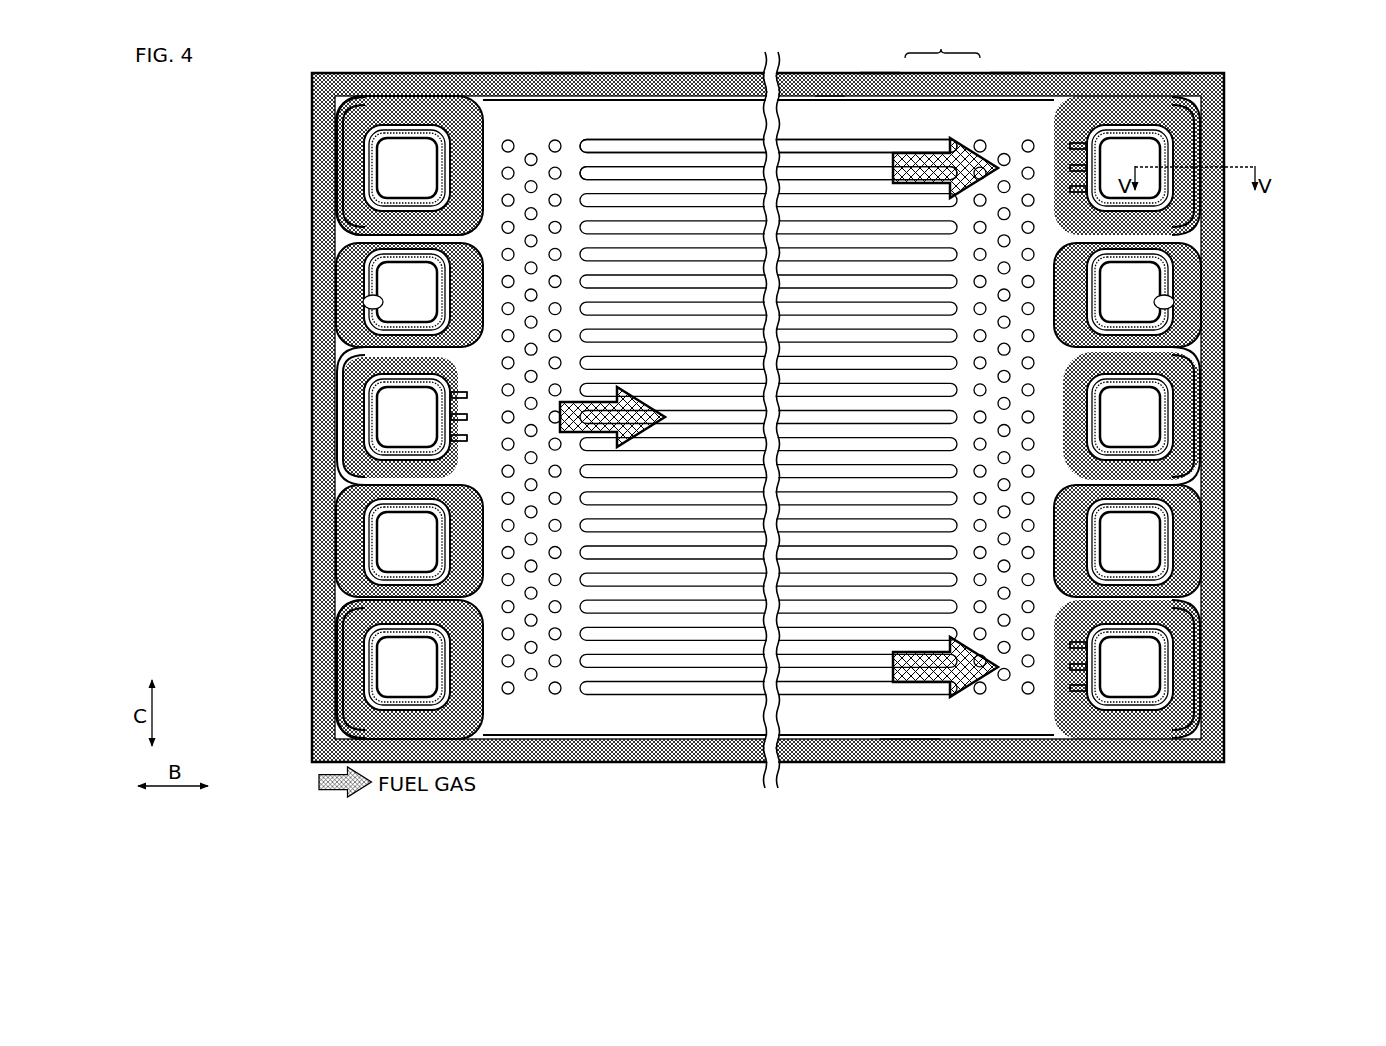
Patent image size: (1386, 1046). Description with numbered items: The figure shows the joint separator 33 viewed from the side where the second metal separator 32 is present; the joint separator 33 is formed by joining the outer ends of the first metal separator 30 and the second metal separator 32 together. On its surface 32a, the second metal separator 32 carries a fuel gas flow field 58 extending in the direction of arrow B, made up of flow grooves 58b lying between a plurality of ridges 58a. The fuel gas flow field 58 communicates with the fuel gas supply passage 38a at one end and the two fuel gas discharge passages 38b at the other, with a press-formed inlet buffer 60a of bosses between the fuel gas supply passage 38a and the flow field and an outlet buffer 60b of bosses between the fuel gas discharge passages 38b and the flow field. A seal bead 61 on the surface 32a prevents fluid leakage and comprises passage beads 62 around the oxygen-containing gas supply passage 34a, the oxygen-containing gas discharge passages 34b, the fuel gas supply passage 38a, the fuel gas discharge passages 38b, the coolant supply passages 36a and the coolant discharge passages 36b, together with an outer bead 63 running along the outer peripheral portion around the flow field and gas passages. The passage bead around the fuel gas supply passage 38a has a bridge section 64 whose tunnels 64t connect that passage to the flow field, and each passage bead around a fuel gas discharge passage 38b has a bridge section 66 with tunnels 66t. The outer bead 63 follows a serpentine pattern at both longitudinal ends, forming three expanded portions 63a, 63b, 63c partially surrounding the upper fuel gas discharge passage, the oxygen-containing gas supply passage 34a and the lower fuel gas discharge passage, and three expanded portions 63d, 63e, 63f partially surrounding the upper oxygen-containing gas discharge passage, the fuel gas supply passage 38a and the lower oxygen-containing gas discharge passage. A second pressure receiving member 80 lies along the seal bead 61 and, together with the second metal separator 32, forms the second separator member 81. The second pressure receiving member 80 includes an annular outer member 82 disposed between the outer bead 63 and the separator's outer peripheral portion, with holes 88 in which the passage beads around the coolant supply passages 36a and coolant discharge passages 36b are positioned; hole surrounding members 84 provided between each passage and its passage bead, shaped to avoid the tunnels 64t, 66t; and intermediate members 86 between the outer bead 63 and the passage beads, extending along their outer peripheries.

The first metal separator 30 is at (1030, 72).
The second metal separator 32 is at (862, 72).
The surface 32a is at (828, 120).
The joint separator 33 is at (942, 40).
The oxygen-containing gas supply passage 34a is at (1150, 425).
The oxygen-containing gas discharge passage 34b is at (392, 160).
The coolant supply passage 36a is at (395, 292).
The coolant discharge passage 36b is at (1145, 290).
The fuel gas supply passage 38a is at (392, 427).
The fuel gas discharge passage 38b is at (1150, 165).
The fuel gas flow field 58 is at (728, 56).
The ridge 58a is at (623, 173).
The flow groove 58b is at (677, 158).
The inlet buffer 60a is at (552, 143).
The outlet buffer 60b is at (982, 150).
The seal bead 61 is at (905, 742).
The passage bead 62 is at (370, 140).
The outer bead 63 is at (1200, 722).
The expanded portion 63a is at (1200, 214).
The expanded portion 63b is at (1190, 364).
The expanded portion 63c is at (1197, 683).
The expanded portion 63d is at (347, 115).
The expanded portion 63e is at (338, 354).
The expanded portion 63f is at (340, 608).
The bridge section 64 is at (478, 410).
The tunnel 64t is at (452, 417).
The bridge section 66 is at (1058, 145).
The tunnel 66t is at (1097, 157).
The second pressure receiving member 80 is at (1212, 90).
The second separator member 81 is at (557, 72).
The outer member 82 is at (1168, 78).
The hole surrounding member 84 is at (442, 137).
The intermediate member 86 is at (412, 105).
The hole 88 is at (383, 302).